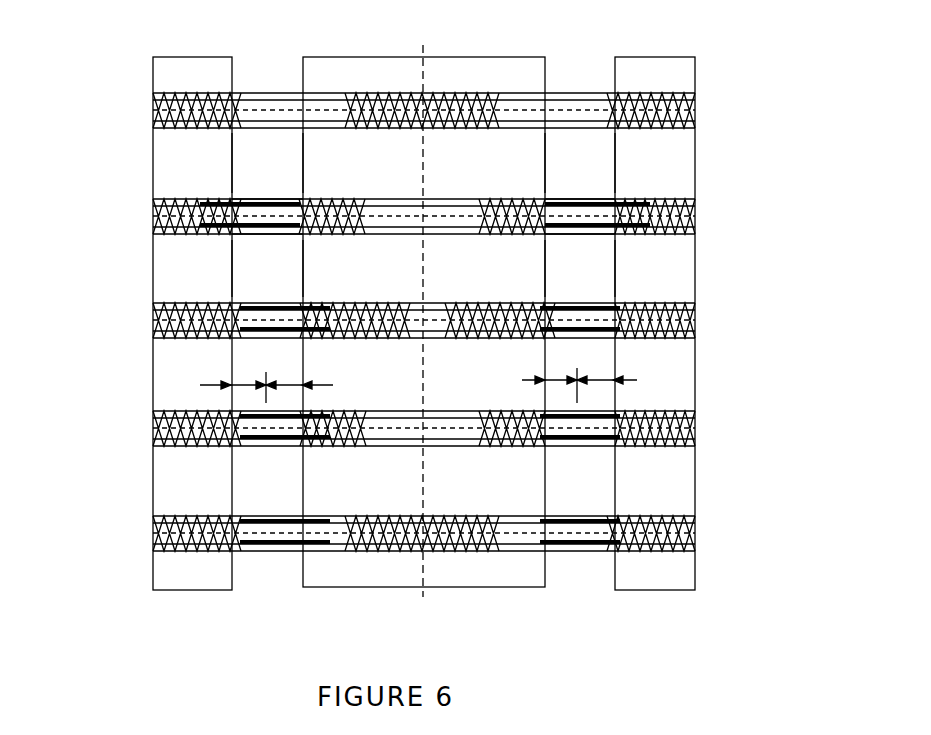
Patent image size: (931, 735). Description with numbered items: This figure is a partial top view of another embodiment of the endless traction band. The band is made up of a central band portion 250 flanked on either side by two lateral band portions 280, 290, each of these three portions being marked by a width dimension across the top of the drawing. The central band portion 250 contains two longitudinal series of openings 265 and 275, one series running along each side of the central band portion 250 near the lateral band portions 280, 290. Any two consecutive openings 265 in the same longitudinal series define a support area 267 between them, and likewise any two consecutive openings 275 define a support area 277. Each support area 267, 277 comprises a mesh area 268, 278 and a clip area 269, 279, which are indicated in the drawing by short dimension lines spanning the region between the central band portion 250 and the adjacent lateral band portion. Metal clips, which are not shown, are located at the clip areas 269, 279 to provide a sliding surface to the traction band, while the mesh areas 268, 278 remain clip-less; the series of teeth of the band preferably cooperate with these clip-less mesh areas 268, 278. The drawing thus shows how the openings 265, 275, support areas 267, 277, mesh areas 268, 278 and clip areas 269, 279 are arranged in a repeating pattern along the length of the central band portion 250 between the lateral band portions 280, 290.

The central band portion 250 is at (614, 10).
The lateral band portion 280 is at (231, 22).
The lateral band portion 290 is at (615, 22).
The opening 265 is at (271, 286).
The support area 267 is at (265, 220).
The opening 275 is at (588, 170).
The support area 277 is at (588, 236).
The mesh area 268 is at (286, 380).
The clip area 269 is at (243, 382).
The mesh area 278 is at (565, 378).
The clip area 279 is at (601, 378).